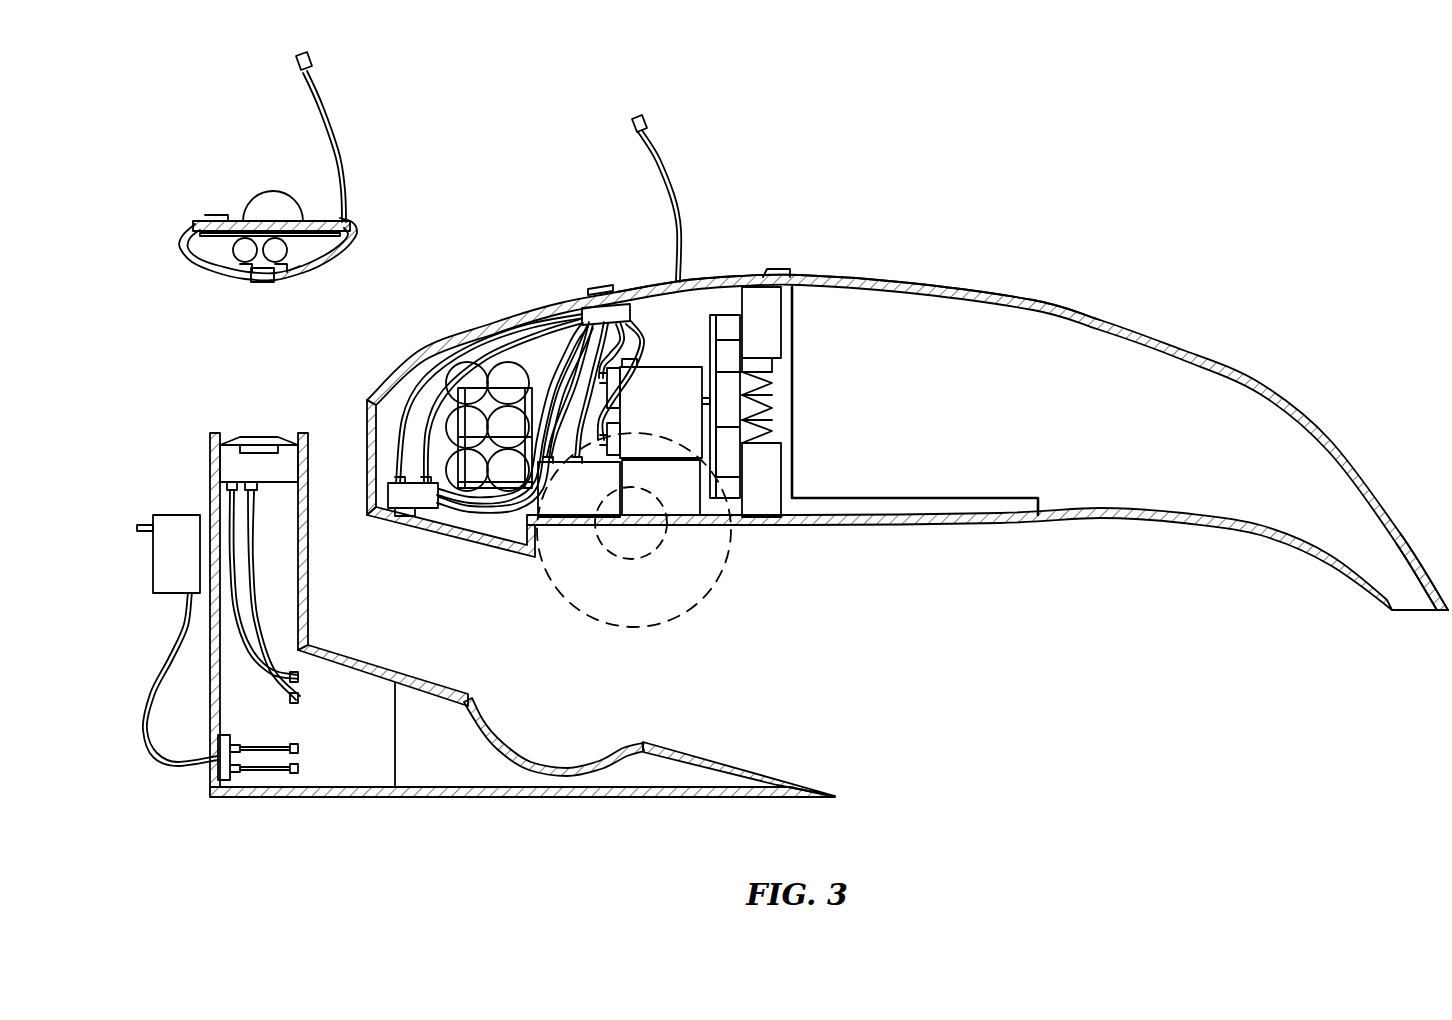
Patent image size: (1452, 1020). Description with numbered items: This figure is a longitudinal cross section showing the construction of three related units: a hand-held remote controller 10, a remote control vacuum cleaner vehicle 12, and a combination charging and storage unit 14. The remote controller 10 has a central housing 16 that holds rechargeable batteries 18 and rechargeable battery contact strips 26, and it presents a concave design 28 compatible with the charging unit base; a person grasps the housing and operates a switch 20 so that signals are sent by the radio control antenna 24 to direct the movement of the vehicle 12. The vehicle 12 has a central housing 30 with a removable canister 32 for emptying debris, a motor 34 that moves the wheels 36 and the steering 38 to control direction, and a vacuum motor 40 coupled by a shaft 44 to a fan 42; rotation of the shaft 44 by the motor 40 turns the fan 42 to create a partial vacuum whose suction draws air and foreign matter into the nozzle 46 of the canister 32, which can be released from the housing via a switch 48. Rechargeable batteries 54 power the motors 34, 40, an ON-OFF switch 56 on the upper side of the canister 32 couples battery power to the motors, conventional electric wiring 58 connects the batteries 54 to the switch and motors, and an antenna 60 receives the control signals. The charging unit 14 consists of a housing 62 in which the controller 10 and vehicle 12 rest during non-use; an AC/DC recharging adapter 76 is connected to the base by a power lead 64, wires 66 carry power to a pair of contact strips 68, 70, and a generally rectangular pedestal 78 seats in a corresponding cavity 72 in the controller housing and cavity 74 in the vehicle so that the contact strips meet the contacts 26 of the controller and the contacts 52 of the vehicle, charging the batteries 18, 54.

The remote controller 10 is at (353, 222).
The remote control vacuum cleaner vehicle 12 is at (907, 412).
The combination charging and storage unit 14 is at (480, 800).
The central housing 16 is at (342, 247).
The rechargeable batteries 18 is at (237, 250).
The switch 20 is at (258, 190).
The antenna 24 is at (335, 122).
The rechargeable battery contact strips 26 is at (262, 278).
The concave design compatible to charging unit base 28 is at (303, 270).
The central housing 30 is at (913, 277).
The removable canister 32 is at (793, 345).
The motor 34 is at (690, 500).
The wheels 36 is at (687, 612).
The steering 38 is at (613, 553).
The vacuum motor 40 is at (648, 422).
The fan 42 is at (733, 357).
The shaft 44 is at (710, 393).
The nozzle 46 is at (1420, 613).
The switch 48 is at (790, 270).
The contacts on vehicle housing 52 is at (400, 515).
The rechargeable batteries 54 is at (535, 505).
The ON-OFF switch 56 is at (607, 283).
The electric wiring 58 is at (493, 348).
The antenna 60 is at (660, 160).
The housing 62 is at (348, 797).
The power lead 64 is at (150, 755).
The wires 66 is at (238, 570).
The contact strip 68 is at (268, 440).
The contact strip 70 is at (345, 668).
The cavity in remote controller housing 72 is at (235, 440).
The cavity in vacuum cleaner vehicle 74 is at (500, 738).
The AC/DC recharging adapter 76 is at (175, 515).
The pedestal 78 is at (703, 752).